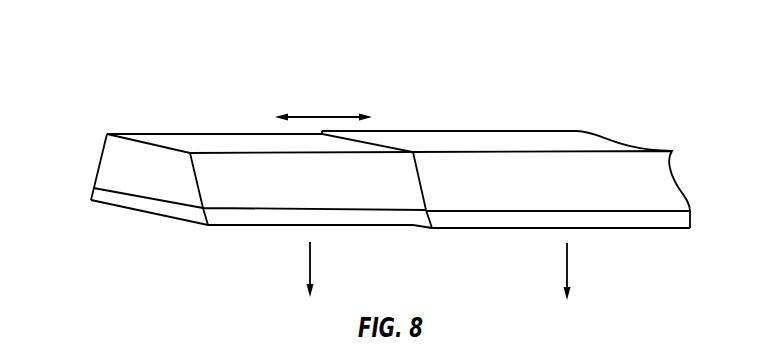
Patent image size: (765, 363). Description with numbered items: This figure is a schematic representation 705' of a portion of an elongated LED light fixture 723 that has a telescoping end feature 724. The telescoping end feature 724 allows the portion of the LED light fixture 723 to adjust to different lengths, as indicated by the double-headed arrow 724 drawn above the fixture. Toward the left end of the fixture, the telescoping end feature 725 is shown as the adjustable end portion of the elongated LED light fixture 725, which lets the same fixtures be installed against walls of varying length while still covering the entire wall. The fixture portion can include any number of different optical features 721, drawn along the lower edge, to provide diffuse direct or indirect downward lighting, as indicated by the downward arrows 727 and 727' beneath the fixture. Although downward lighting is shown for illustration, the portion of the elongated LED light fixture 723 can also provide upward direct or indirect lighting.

The schematic representation 705' is at (361, 159).
The optical features 721 is at (138, 211).
The elongated LED light fixture 723 is at (492, 138).
The telescoping end feature 724 is at (327, 117).
The telescoping end feature 725 is at (98, 170).
The arrow 727 is at (278, 269).
The arrow 727' is at (601, 271).